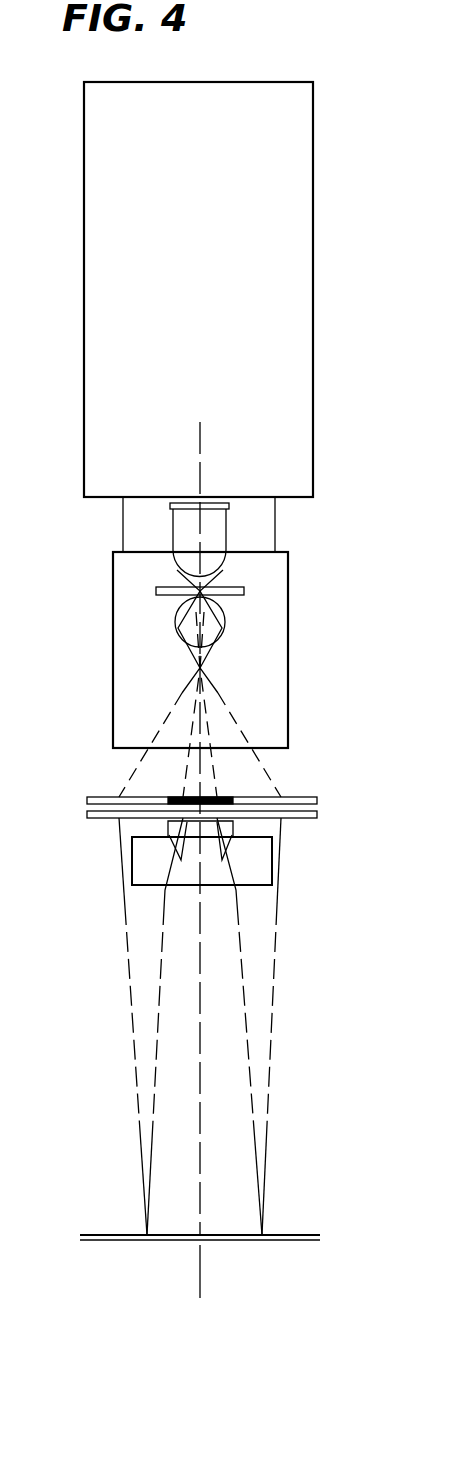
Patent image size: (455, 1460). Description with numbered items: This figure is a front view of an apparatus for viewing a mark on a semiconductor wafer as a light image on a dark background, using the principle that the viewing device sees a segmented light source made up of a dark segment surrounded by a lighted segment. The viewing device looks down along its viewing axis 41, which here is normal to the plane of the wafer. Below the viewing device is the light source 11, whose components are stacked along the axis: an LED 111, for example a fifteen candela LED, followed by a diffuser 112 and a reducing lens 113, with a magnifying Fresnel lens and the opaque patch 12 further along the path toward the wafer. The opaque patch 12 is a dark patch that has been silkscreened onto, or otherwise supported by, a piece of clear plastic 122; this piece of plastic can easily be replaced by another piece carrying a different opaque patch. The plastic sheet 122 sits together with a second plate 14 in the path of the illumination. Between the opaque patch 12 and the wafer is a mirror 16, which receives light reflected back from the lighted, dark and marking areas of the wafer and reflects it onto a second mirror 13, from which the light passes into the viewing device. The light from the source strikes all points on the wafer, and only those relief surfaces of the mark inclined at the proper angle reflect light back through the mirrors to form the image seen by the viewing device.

The viewing axis 41 is at (198, 467).
The LED 111 is at (218, 532).
The diffuser 112 is at (244, 590).
The reducing lens 113 is at (215, 622).
The light source 11 is at (190, 829).
The opaque patch 12 is at (175, 797).
The piece of clear plastic 122 is at (302, 795).
The lower transparent plate 14 is at (300, 817).
The mirror 16 is at (180, 823).
The second mirror 13 is at (268, 872).